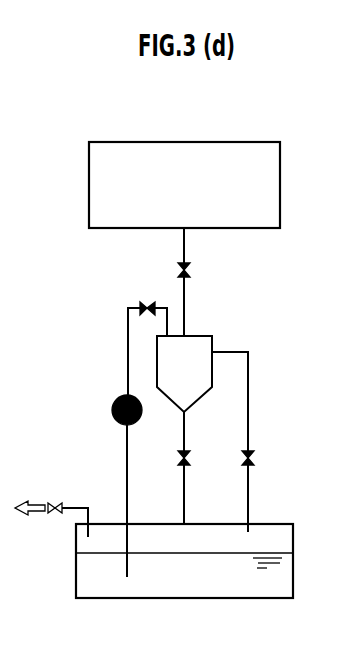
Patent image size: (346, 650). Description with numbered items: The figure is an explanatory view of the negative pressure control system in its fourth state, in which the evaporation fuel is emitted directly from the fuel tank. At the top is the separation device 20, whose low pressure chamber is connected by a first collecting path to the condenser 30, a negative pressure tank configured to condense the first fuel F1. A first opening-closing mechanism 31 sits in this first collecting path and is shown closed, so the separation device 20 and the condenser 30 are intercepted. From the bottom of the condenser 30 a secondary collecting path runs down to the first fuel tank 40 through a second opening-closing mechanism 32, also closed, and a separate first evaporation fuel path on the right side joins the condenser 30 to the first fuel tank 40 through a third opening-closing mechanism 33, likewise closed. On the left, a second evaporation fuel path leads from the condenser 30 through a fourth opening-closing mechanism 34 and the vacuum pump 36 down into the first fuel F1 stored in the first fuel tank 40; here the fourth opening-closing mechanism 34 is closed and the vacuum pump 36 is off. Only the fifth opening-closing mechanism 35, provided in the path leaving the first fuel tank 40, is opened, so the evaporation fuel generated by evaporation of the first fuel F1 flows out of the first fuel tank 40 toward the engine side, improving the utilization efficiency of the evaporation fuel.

The separation device 20 is at (236, 142).
The first opening-closing mechanism 31 is at (190, 266).
The condenser 30 is at (196, 336).
The second opening-closing mechanism 32 is at (190, 456).
The third opening-closing mechanism 33 is at (253, 457).
The fourth opening-closing mechanism 34 is at (140, 307).
The vacuum pump 36 is at (113, 400).
The fifth opening-closing mechanism 35 is at (62, 504).
The first fuel tank 40 is at (270, 524).
The first fuel F1 is at (287, 587).